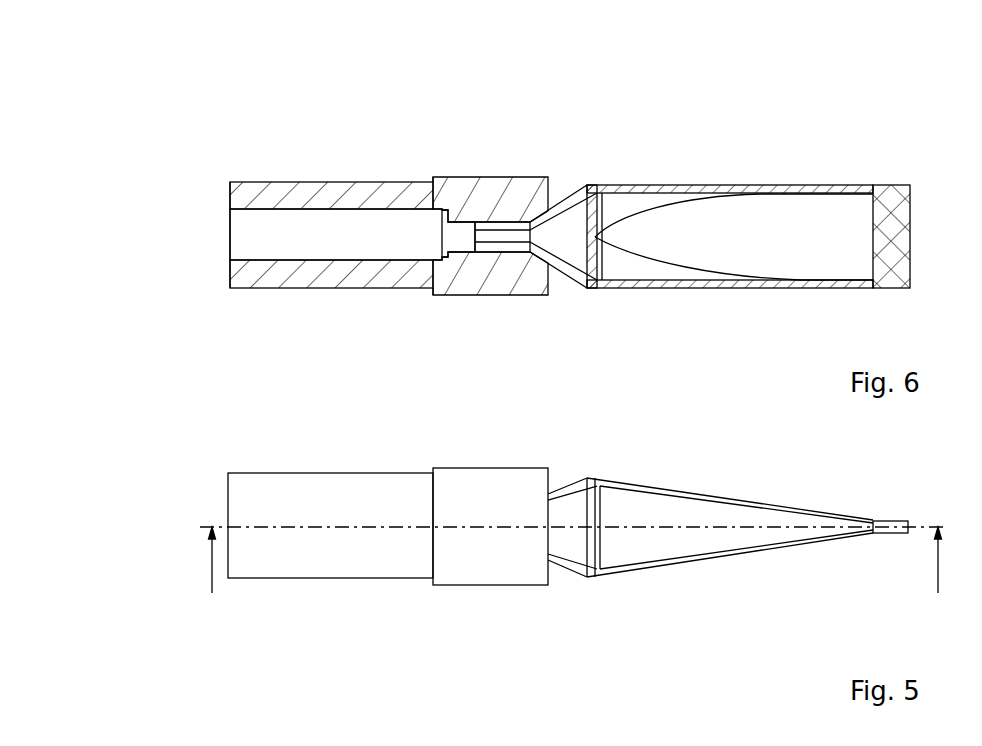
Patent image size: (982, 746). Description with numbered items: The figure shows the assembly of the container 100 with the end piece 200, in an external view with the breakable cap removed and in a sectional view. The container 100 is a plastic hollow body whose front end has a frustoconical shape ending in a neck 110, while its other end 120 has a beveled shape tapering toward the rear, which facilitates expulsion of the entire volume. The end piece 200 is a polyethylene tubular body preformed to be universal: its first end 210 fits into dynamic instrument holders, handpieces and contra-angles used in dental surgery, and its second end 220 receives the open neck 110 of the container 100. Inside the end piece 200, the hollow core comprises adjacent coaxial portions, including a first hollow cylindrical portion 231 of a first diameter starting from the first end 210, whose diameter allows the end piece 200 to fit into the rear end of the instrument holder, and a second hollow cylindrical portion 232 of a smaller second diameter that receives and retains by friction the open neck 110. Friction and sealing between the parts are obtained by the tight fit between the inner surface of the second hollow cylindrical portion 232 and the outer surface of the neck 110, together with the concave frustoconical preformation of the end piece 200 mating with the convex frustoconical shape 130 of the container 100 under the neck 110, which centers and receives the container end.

In FIG. 6, the container 100 is at (728, 173).
In FIG. 5, the container 100 is at (686, 599).
In FIG. 6, the neck 110 is at (475, 248).
In FIG. 6, the other end 120 is at (852, 213).
In FIG. 6, the convex frustoconical preformation 130 is at (580, 190).
In FIG. 6, the end piece 200 is at (400, 143).
In FIG. 5, the end piece 200 is at (423, 580).
In FIG. 5, the first end 210 is at (210, 495).
In FIG. 5, the second end 220 is at (552, 608).
In FIG. 6, the first hollow cylindrical portion 231 is at (365, 240).
In FIG. 6, the second hollow cylindrical portion 232 is at (458, 240).